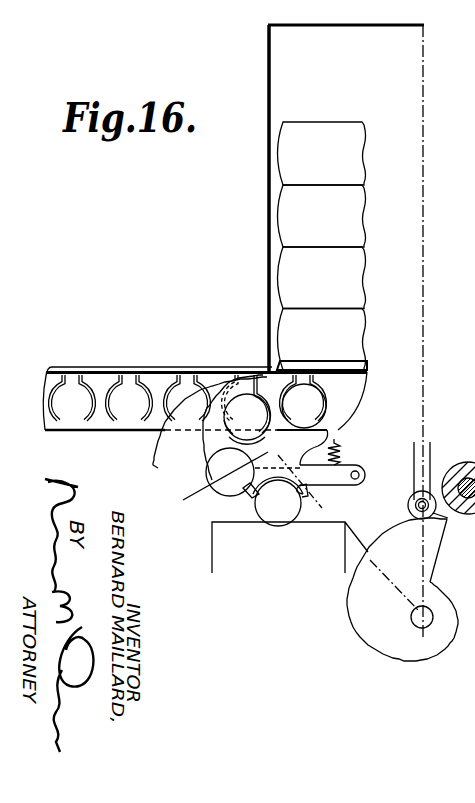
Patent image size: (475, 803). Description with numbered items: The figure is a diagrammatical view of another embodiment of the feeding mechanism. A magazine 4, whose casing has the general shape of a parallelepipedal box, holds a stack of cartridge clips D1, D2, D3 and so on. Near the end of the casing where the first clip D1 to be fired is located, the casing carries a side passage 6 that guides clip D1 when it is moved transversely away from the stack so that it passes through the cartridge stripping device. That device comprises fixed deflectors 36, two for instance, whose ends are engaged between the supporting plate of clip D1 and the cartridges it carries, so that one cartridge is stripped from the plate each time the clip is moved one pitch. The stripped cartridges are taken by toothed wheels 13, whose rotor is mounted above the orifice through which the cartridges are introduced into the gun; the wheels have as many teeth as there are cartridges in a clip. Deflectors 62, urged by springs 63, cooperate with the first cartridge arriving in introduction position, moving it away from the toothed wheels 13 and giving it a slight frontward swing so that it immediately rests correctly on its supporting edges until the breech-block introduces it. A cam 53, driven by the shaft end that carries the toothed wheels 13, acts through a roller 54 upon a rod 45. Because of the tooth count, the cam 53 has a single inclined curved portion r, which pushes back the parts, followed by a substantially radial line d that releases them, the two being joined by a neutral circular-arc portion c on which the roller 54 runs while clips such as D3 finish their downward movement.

The magazine 4 is at (268, 222).
The cartridge clip D3 is at (290, 280).
The cartridge clip D2 is at (285, 341).
The first cartridge clip D1 is at (72, 426).
The side passage 6 is at (90, 370).
The fixed deflectors 36 is at (177, 455).
The toothed wheels 13 is at (224, 478).
The deflectors 62 is at (335, 480).
The springs 63 is at (338, 447).
The rod 45 is at (414, 470).
The roller 54 is at (408, 508).
The cam 53 is at (474, 443).
The curved portion r is at (382, 539).
The radial line d is at (441, 547).
The neutral portion c is at (456, 611).